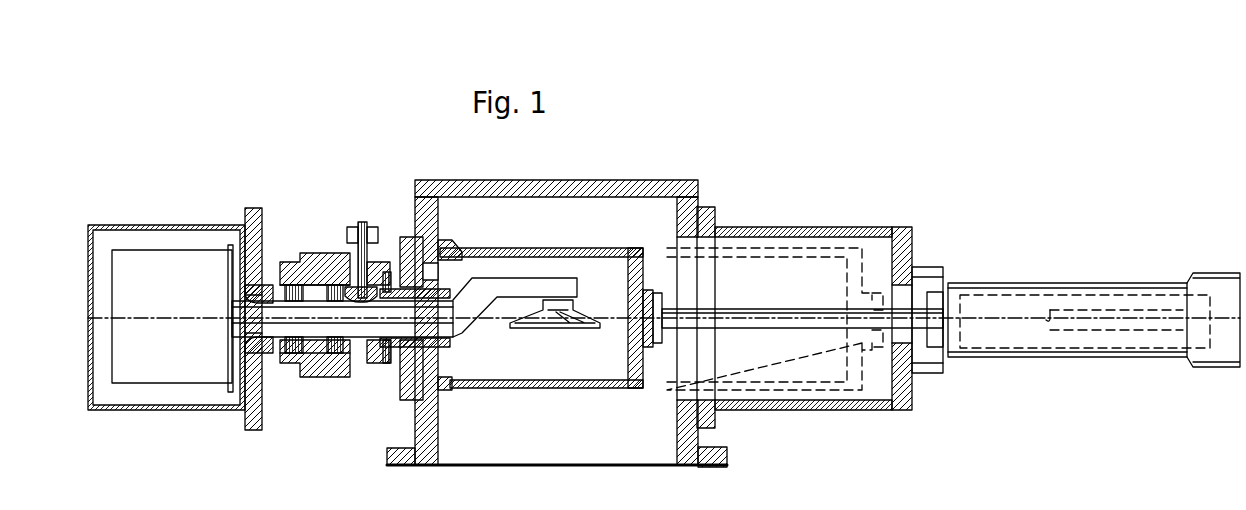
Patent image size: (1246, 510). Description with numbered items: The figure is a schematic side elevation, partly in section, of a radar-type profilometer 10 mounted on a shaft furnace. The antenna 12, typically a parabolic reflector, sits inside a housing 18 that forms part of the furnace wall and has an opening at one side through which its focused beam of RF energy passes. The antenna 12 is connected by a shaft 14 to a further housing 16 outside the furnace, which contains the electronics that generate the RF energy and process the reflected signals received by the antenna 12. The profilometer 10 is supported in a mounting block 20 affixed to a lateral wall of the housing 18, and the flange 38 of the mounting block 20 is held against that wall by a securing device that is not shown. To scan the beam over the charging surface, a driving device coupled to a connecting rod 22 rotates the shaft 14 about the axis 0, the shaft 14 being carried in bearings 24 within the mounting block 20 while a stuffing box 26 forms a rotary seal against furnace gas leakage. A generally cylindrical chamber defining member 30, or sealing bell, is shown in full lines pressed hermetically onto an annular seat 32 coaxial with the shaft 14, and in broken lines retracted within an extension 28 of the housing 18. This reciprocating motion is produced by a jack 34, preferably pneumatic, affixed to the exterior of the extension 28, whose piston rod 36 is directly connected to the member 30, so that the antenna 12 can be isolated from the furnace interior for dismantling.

The axis O 0 is at (160, 317).
The profilometer 10 is at (355, 215).
The antenna 12 is at (537, 330).
The shaft 14 is at (273, 328).
The further housing 16 is at (120, 225).
The housing 18 is at (620, 220).
The mounting block 20 is at (323, 272).
The connecting rod 22 is at (363, 223).
The bearings 24 is at (298, 353).
The stuffing box 26 is at (385, 345).
The extension 28 is at (826, 232).
The chamber defining member 30 is at (532, 388).
The annular seat 32 is at (450, 392).
The jack 34 is at (1008, 290).
The piston rod 36 is at (820, 320).
The flange 38 is at (403, 400).